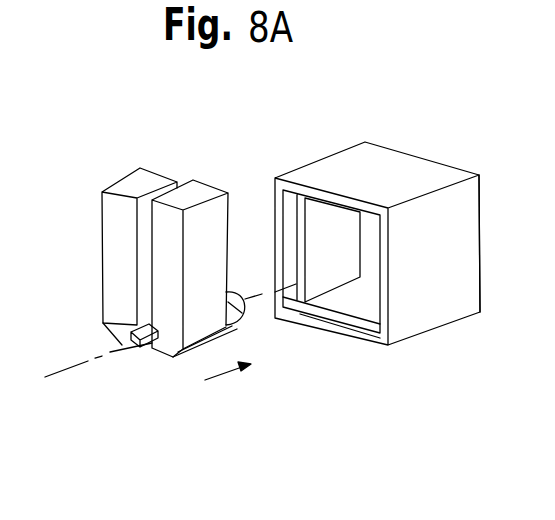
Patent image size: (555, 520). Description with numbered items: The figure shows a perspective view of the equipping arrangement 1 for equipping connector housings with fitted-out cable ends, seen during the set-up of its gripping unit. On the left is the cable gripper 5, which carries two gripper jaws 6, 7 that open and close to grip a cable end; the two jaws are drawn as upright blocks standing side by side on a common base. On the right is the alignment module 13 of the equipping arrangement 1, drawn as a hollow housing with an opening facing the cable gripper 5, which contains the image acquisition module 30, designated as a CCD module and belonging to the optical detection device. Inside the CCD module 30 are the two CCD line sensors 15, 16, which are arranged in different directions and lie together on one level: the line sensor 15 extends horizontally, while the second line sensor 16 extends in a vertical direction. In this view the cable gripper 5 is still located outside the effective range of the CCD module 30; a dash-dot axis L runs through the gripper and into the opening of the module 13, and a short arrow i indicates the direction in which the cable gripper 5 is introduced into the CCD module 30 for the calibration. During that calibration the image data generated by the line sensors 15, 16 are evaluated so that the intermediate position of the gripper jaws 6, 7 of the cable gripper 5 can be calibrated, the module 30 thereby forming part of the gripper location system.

The equipping arrangement 1 is at (111, 105).
The cable gripper 5 is at (183, 172).
The gripper jaw 6 is at (110, 256).
The gripper jaw 7 is at (200, 275).
The housing 13 is at (432, 150).
The line sensor 15 is at (350, 310).
The second line sensor 16 is at (303, 268).
The image acquisition module 30 is at (452, 273).
The longitudinal axis L is at (67, 374).
The insertion direction i is at (228, 367).